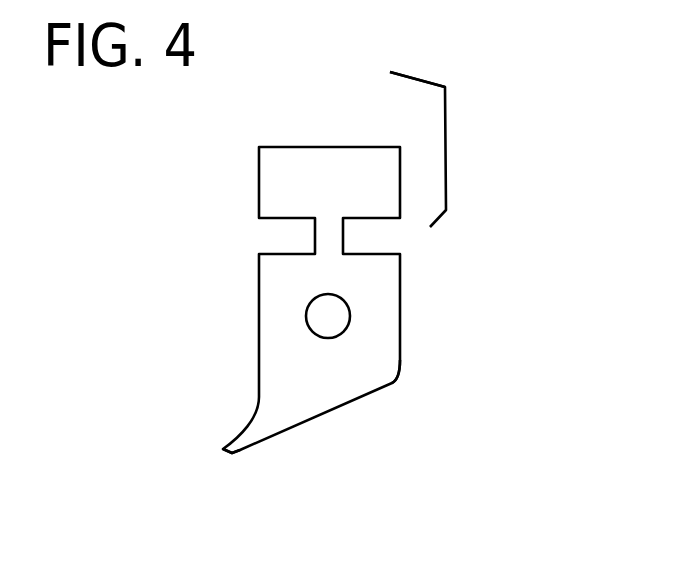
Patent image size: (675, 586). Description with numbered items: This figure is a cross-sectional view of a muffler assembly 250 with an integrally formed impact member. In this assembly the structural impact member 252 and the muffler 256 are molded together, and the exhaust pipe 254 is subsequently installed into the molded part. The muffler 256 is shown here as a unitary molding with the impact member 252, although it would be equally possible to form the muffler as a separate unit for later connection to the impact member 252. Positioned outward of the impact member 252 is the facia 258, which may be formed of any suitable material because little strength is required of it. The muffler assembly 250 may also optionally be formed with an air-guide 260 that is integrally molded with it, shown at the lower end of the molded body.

The muffler assembly 250 is at (448, 146).
The structural impact member 252 is at (332, 147).
The exhaust pipe 254 is at (346, 311).
The muffler 256 is at (392, 383).
The facia 258 is at (417, 78).
The air-guide 260 is at (240, 452).